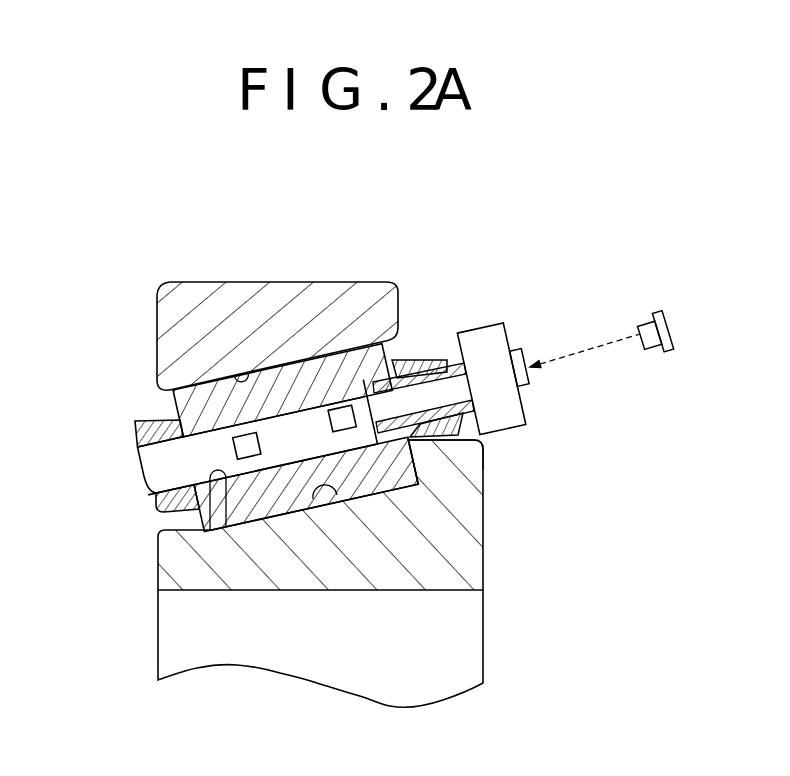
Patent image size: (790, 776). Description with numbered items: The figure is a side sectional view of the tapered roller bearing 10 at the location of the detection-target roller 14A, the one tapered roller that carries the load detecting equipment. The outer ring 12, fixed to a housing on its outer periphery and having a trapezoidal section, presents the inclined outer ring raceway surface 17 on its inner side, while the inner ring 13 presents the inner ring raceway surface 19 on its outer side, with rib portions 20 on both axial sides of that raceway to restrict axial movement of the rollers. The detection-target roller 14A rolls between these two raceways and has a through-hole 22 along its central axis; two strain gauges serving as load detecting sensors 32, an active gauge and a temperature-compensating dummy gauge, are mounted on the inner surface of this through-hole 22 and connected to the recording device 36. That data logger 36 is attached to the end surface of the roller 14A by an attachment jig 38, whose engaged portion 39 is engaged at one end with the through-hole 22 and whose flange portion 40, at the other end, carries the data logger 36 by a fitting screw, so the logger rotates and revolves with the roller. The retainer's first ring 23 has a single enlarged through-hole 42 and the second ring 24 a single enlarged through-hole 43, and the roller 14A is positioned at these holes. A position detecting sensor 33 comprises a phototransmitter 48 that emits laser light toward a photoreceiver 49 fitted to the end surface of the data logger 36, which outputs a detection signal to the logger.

The tapered roller bearing 10 is at (147, 270).
The outer ring 12 is at (330, 280).
The inner ring 13 is at (278, 570).
The detection-target roller 14A is at (280, 366).
The outer ring raceway surface 17 is at (240, 372).
The inner ring raceway surface 19 is at (337, 496).
The rib portions 20 is at (468, 519).
The through-hole 22 is at (231, 530).
The first ring 23 is at (481, 443).
The second ring 24 is at (134, 424).
The load detecting sensors 32 is at (343, 408).
The position detecting sensor 33 is at (596, 296).
The recording device 36 is at (490, 322).
The attachment jig 38 is at (500, 225).
The engaged portion 39 is at (415, 362).
The flange portion 40 is at (450, 368).
The through-hole 42 is at (420, 445).
The through-hole 43 is at (155, 482).
The phototransmitter 48 is at (649, 312).
The photoreceiver 49 is at (530, 360).